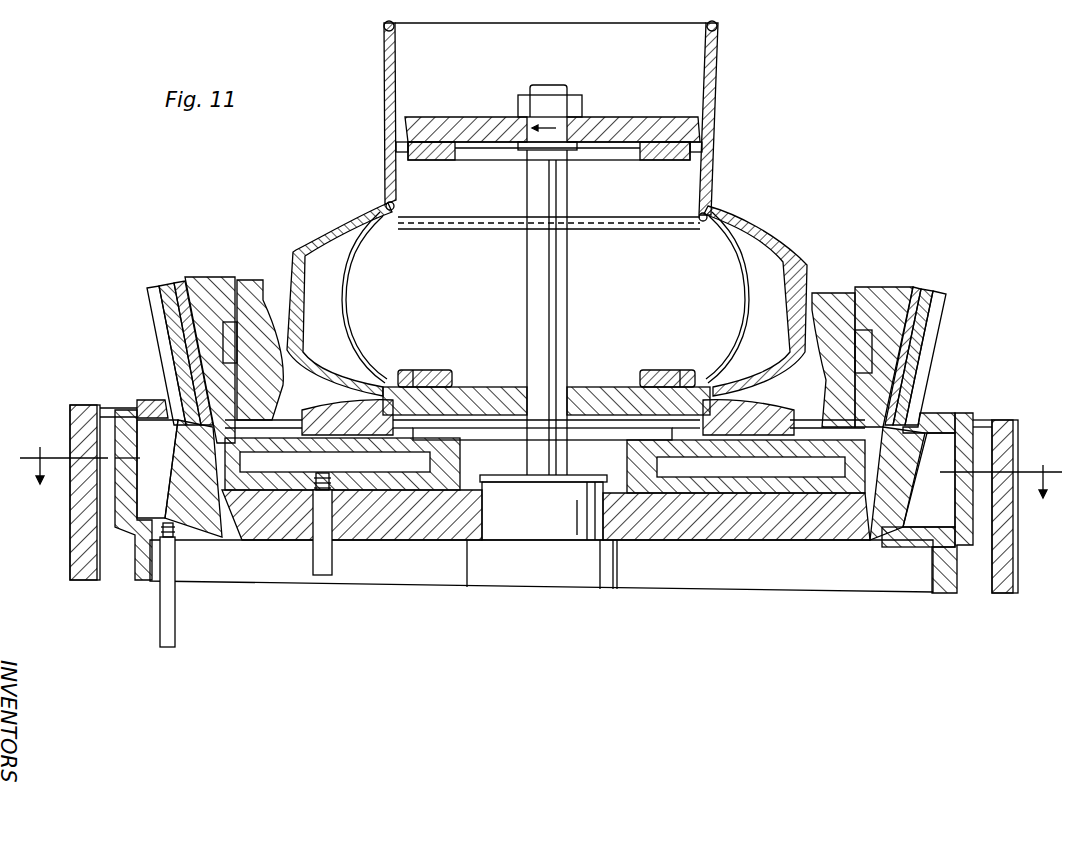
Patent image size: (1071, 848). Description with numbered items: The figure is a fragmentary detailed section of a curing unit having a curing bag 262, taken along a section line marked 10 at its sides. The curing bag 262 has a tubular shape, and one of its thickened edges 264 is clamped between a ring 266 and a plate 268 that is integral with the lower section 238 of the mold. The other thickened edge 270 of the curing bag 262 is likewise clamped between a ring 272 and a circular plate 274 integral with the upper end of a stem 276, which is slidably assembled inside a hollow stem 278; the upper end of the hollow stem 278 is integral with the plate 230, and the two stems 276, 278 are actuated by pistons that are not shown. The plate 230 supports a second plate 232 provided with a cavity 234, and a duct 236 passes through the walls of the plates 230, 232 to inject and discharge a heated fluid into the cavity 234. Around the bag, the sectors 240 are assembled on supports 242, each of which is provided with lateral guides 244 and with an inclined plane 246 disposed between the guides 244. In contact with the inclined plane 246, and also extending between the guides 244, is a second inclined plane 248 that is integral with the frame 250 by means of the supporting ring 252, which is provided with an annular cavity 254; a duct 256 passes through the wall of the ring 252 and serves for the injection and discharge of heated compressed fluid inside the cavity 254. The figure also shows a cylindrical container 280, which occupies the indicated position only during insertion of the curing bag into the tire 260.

The section line 10 is at (541, 459).
The plate 230 is at (717, 541).
The second plate 232 is at (811, 488).
The cavity 234 is at (277, 464).
The duct 236 is at (327, 558).
The lower section of the mold 238 is at (340, 414).
The sectors 240 is at (261, 291).
The supports 242 is at (203, 280).
The lateral guides 244 is at (168, 312).
The inclined plane 246 is at (178, 298).
The second inclined plane 248 is at (180, 357).
The frame 250 is at (140, 568).
The supporting ring 252 is at (124, 470).
The annular cavity 254 is at (148, 456).
The duct 256 is at (171, 632).
The tire 260 is at (346, 222).
The curing bag 262 is at (362, 255).
The thickened edge 264 is at (417, 369).
The ring 266 is at (655, 370).
The plate 268 is at (488, 397).
The thickened edge 270 is at (433, 160).
The ring 272 is at (648, 161).
The circular plate 274 is at (636, 127).
The stem 276 is at (568, 220).
The hollow stem 278 is at (555, 522).
The cylindrical container 280 is at (714, 107).